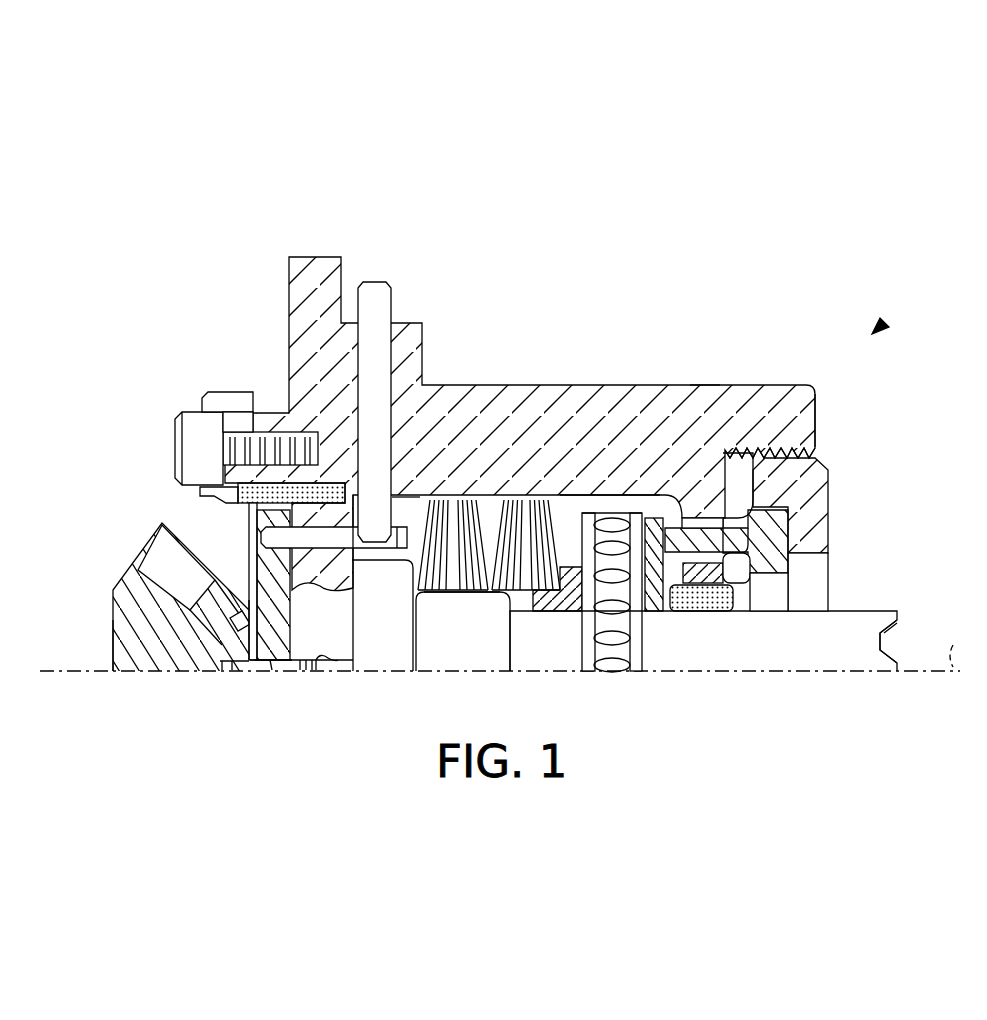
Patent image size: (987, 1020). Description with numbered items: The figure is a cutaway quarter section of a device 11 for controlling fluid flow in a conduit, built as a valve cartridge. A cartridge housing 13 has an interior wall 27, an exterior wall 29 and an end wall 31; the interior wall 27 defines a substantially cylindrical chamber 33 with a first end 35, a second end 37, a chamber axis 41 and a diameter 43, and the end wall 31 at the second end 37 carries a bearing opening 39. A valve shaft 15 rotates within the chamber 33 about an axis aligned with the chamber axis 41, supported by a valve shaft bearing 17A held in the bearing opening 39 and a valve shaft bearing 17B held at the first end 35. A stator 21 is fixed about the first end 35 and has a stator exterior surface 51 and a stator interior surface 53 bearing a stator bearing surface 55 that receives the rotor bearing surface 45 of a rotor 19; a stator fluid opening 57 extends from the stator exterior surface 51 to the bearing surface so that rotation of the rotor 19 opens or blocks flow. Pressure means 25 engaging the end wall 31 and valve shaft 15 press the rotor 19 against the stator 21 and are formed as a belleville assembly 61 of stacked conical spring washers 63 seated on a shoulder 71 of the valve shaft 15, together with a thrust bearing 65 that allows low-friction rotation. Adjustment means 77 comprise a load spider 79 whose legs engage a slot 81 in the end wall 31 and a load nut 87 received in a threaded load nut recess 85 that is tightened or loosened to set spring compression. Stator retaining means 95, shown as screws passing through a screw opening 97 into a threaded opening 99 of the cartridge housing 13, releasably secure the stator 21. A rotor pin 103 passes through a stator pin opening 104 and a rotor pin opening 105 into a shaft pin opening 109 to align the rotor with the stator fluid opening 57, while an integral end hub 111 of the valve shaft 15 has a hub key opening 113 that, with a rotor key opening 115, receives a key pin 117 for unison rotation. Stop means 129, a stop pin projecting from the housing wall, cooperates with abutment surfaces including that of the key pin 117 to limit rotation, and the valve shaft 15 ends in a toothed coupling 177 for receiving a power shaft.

The device 11 is at (878, 329).
The cartridge housing 13 is at (572, 400).
The valve shaft 15 is at (805, 655).
The valve shaft bearing 17A is at (712, 605).
The valve shaft bearing 17B is at (275, 486).
The rotor 19 is at (289, 611).
The stator 21 is at (155, 665).
The pressure means 25 is at (456, 575).
The interior wall 27 is at (610, 523).
The exterior wall 29 is at (690, 385).
The end wall 31 is at (657, 612).
The chamber 33 is at (491, 597).
The first end 35 is at (236, 418).
The second end 37 is at (820, 418).
The bearing opening 39 is at (750, 607).
The chamber axis 41 is at (948, 637).
The diameter 43 is at (425, 595).
The rotor bearing surface 45 is at (258, 660).
The stator exterior surface 51 is at (112, 612).
The stator interior surface 53 is at (198, 500).
The stator bearing surface 55 is at (247, 660).
The stator fluid opening 57 is at (162, 565).
The belleville assembly 61 is at (530, 577).
The spring washer 63 is at (492, 575).
The thrust bearing 65 is at (613, 660).
The shoulder 71 is at (412, 577).
The adjustment means 77 is at (786, 530).
The load spider 79 is at (776, 553).
The slot 81 is at (708, 522).
The load nut recess 85 is at (742, 474).
The load nut 87 is at (812, 500).
The stator retaining means 95 is at (176, 452).
The screw opening 97 is at (218, 430).
The threaded opening 99 is at (780, 450).
The rotor pin 103 is at (293, 665).
The stator pin opening 104 is at (224, 668).
The rotor pin opening 105 is at (273, 665).
The shaft pin opening 109 is at (320, 665).
The end hub 111 is at (344, 605).
The hub key opening 113 is at (294, 528).
The rotor key opening 115 is at (245, 523).
The key pin 117 is at (414, 520).
The stop means 129 is at (393, 303).
The toothed coupling 177 is at (903, 665).